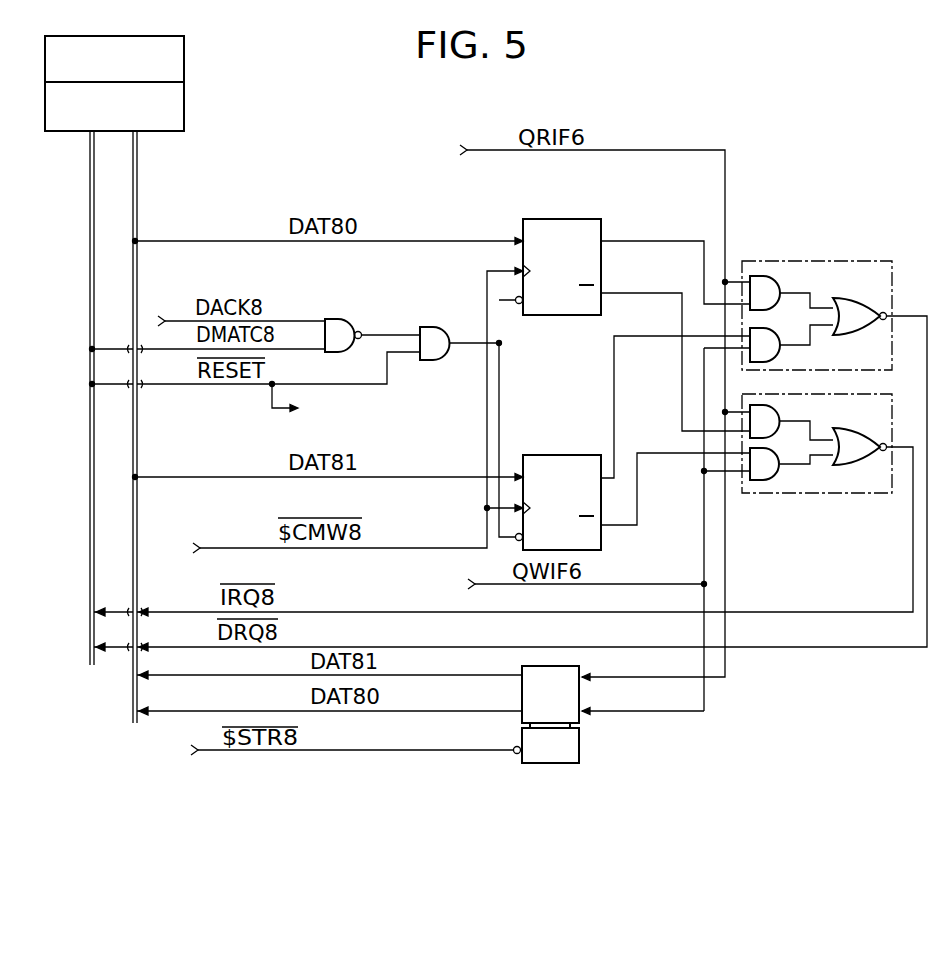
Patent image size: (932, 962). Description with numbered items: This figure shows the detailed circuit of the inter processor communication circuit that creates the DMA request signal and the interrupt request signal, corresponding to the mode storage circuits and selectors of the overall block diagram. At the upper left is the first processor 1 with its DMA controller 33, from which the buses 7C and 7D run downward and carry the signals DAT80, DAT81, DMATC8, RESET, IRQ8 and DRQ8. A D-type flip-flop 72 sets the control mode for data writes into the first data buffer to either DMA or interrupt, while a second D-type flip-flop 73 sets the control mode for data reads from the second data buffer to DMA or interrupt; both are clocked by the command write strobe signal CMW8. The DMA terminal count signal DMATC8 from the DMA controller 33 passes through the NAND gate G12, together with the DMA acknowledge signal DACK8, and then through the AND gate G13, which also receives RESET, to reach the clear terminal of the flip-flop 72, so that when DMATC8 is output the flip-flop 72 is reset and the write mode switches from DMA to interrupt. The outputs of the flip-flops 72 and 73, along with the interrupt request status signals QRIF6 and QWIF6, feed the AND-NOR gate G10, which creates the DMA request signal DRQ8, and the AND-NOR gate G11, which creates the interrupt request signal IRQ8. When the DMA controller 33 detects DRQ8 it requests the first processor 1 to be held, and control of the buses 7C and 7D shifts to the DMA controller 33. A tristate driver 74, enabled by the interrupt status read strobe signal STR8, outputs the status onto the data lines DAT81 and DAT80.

The first processor 1 is at (186, 66).
The DMA controller 33 is at (186, 113).
The bus 7C is at (88, 199).
The bus 7D is at (139, 176).
The NAND gate G12 is at (342, 319).
The AND gate G13 is at (438, 327).
The D-type flip-flop 72 is at (585, 183).
The D-type flip-flop 73 is at (575, 455).
The AND-NOR gate G10 is at (822, 261).
The AND-NOR gate G11 is at (775, 494).
The tristate driver 74 is at (567, 667).